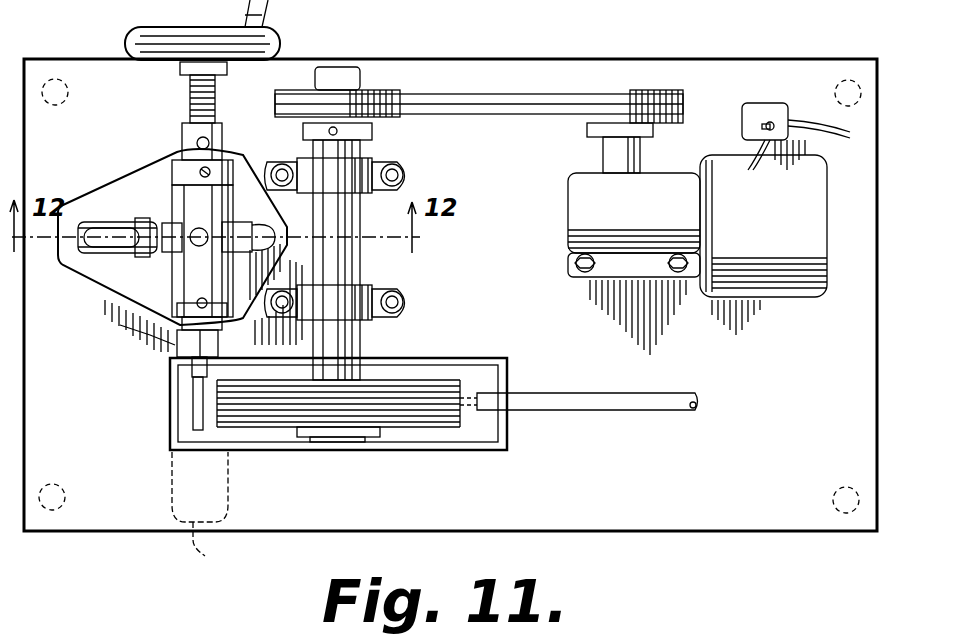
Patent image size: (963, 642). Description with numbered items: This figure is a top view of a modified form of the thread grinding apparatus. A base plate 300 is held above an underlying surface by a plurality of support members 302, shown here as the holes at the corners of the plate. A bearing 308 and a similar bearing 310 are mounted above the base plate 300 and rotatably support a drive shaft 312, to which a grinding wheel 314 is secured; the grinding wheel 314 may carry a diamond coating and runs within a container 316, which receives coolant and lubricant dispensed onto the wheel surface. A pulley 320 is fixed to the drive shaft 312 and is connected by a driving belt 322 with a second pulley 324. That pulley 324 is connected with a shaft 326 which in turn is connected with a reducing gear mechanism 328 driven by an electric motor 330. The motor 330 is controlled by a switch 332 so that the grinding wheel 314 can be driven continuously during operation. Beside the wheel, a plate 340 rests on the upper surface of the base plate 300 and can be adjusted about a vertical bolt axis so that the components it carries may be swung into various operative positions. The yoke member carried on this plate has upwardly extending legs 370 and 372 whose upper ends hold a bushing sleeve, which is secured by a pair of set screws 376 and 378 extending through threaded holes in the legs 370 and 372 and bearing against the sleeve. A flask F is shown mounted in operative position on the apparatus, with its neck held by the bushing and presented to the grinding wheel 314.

The base plate 300 is at (748, 493).
The support members 302 is at (68, 92).
The bearing 308 is at (372, 160).
The bearing 310 is at (372, 320).
The drive shaft 312 is at (355, 262).
The grinding wheel 314 is at (410, 438).
The container 316 is at (283, 450).
The pulley 320 is at (385, 92).
The driving belt 322 is at (497, 95).
The pulley 324 is at (665, 92).
The shaft 326 is at (635, 150).
The reducing gear mechanism 328 is at (670, 207).
The electric motor 330 is at (788, 224).
The switch 332 is at (759, 96).
The plate 340 is at (97, 270).
The leg 370 is at (172, 172).
The leg 372 is at (165, 312).
The set screw 376 is at (212, 172).
The set screw 378 is at (200, 303).
The flask F is at (200, 512).